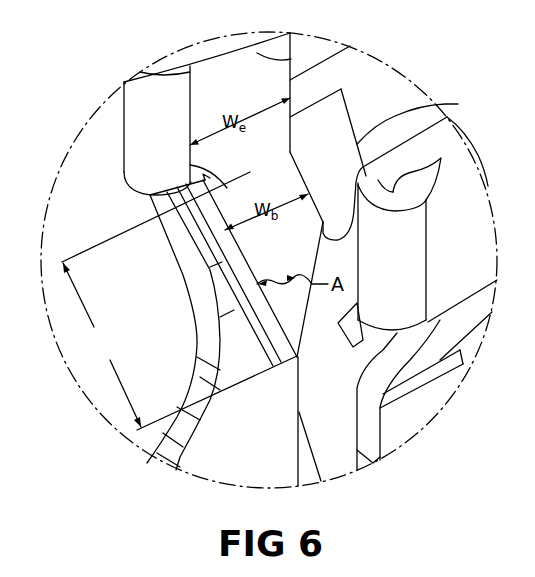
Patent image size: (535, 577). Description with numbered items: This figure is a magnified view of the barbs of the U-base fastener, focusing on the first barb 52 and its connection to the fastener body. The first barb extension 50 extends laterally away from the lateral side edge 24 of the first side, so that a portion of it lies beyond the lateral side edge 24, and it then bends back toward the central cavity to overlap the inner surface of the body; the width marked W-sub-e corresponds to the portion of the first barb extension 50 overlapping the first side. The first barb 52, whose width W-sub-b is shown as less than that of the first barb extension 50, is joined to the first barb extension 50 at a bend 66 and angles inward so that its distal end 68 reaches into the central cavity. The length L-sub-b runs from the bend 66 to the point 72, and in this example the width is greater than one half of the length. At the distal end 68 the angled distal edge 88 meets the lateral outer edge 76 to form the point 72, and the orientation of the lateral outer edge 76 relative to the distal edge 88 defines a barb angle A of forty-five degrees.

The lateral side edge 24 is at (178, 226).
The first barb extension 50 is at (300, 44).
The first barb 52 is at (220, 259).
The bend 66 is at (196, 164).
The distal end 68 is at (255, 332).
The point 72 is at (299, 359).
The lateral outer edge 76 is at (241, 290).
The distal edge 88 is at (444, 104).